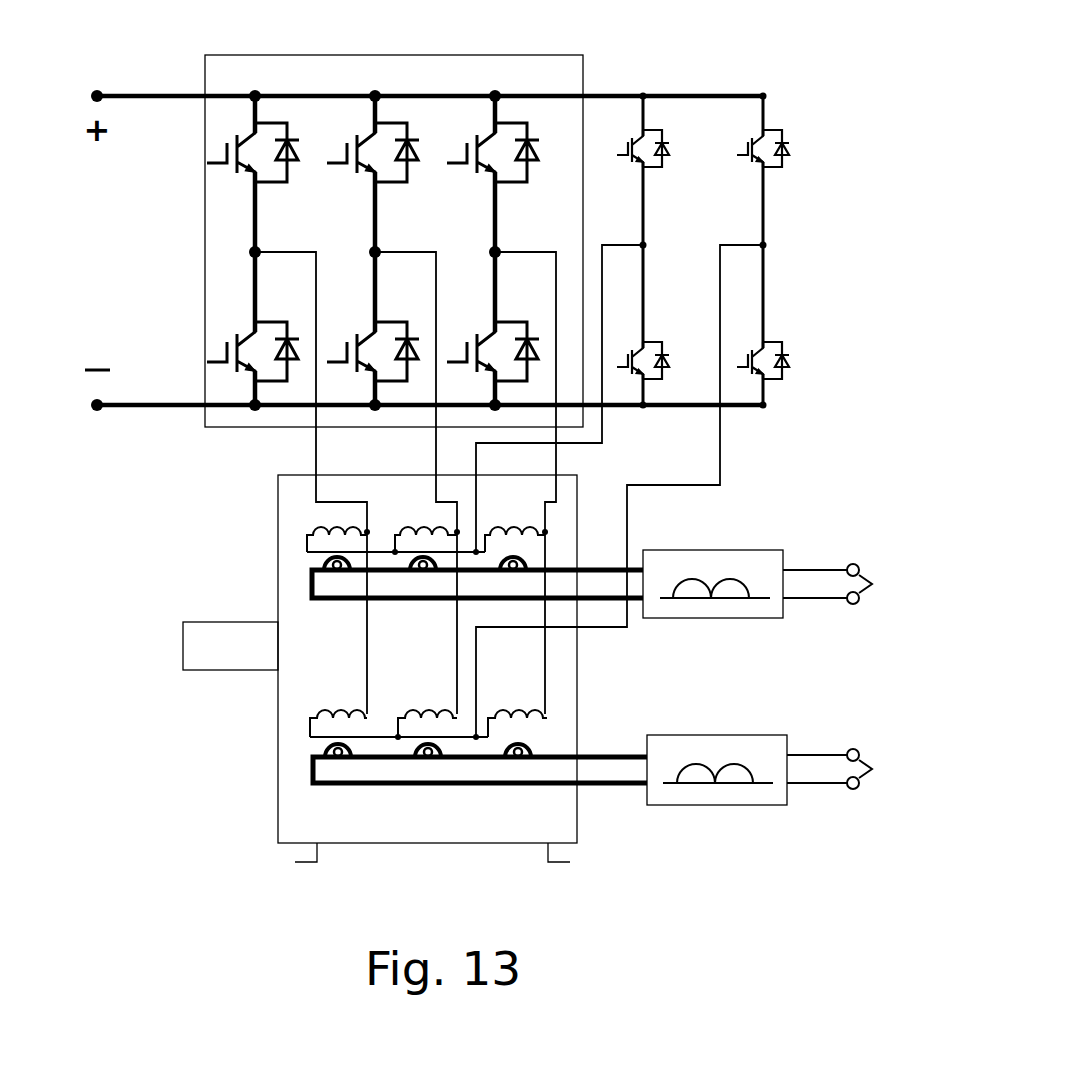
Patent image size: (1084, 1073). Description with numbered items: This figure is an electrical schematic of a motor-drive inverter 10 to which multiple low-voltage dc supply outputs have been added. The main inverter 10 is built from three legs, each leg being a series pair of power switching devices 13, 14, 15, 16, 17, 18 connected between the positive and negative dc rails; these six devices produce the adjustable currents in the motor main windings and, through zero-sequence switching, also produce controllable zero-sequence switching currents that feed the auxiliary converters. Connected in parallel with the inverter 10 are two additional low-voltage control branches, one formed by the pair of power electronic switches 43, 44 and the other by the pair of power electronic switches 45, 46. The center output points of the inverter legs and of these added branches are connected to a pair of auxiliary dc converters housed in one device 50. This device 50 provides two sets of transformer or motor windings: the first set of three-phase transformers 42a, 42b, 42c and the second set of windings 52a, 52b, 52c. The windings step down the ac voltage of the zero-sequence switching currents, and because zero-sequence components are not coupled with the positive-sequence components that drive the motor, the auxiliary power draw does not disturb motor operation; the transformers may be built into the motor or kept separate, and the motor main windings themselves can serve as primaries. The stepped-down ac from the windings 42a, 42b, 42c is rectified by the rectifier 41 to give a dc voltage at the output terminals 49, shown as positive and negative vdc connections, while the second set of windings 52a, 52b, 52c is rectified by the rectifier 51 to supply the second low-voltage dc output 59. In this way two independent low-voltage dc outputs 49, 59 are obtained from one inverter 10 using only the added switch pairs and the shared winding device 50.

The inverter 10 is at (585, 80).
The power switching device 13 is at (223, 157).
The power switching device 14 is at (223, 355).
The power switching device 15 is at (341, 156).
The power switching device 16 is at (340, 353).
The power switching device 17 is at (463, 142).
The power switching device 18 is at (460, 353).
The power electronic switch 43 is at (628, 152).
The power electronic switch 44 is at (628, 358).
The power electronic switch 45 is at (750, 152).
The power electronic switch 46 is at (747, 363).
The rectifier 41 is at (713, 547).
The three-phase transformer 42a is at (313, 557).
The three-phase transformer 42b is at (443, 560).
The three-phase transformer 42c is at (503, 557).
The output terminals 49 is at (848, 584).
The device 50 is at (278, 750).
The rectifier 51 is at (713, 733).
The transformer winding 52a is at (313, 747).
The transformer winding 52b is at (413, 737).
The transformer winding 52c is at (525, 735).
The low-voltage DC output 59 is at (850, 773).